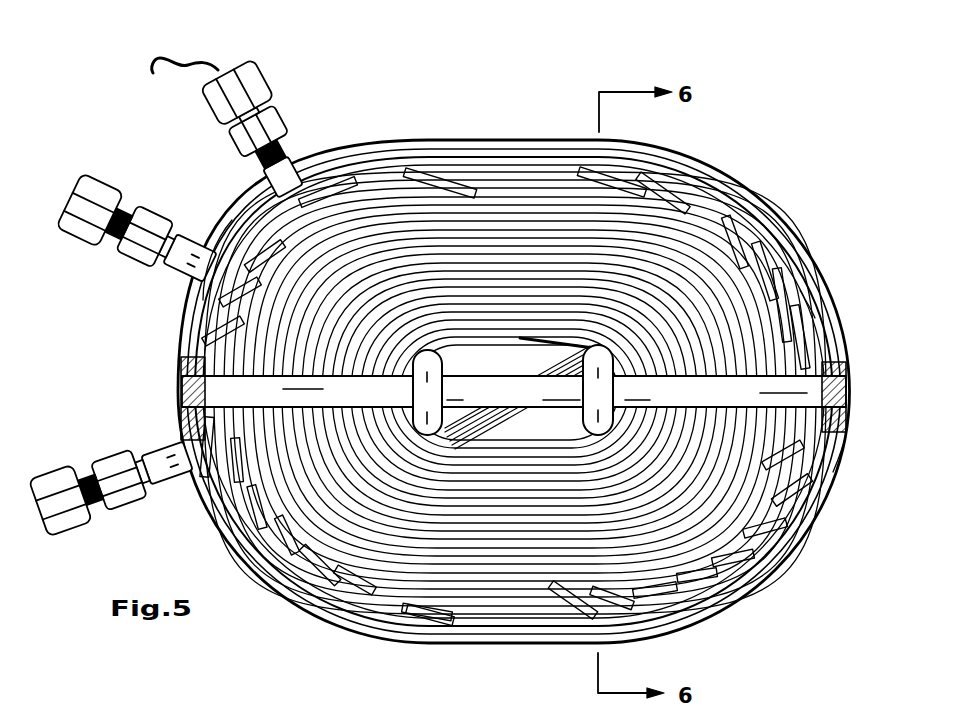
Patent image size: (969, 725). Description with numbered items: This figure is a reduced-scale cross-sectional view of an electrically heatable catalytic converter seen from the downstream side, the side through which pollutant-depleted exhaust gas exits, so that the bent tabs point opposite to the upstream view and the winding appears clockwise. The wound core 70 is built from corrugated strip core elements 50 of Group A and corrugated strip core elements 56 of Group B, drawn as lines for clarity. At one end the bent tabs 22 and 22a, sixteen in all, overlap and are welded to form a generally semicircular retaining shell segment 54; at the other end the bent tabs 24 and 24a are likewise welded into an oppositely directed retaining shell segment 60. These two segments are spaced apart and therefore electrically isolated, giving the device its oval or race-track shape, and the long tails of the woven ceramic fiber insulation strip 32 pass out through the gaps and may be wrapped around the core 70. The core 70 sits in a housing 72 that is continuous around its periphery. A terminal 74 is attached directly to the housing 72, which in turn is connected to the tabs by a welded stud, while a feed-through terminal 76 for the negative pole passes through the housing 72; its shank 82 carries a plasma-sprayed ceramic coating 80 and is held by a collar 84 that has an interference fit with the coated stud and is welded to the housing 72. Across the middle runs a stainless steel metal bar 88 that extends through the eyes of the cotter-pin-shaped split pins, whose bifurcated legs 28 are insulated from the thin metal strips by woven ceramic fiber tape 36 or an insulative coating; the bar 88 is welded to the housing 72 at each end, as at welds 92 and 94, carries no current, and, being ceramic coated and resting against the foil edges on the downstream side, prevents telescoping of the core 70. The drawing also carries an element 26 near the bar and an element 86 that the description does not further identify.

The bent tabs 22 is at (365, 178).
The bent tabs 22a is at (722, 575).
The bent tabs 24 is at (768, 253).
The bent tabs 24a is at (262, 546).
The mandrel 26 is at (479, 392).
The bifurcated leg 28 is at (657, 390).
The insulation strip 32 is at (373, 562).
The woven ceramic fiber tape 36 is at (545, 345).
The corrugated strip core elements 50 is at (558, 214).
The retaining shell segment 54 is at (212, 330).
The corrugated strip core elements 56 is at (470, 578).
The retaining shell segment 60 is at (800, 295).
The core 70 is at (730, 546).
The housing 72 is at (846, 444).
The terminal 74 is at (140, 206).
The feed-through terminal 76 is at (89, 464).
The ceramic coating 80 is at (160, 492).
The shank 82 is at (100, 507).
The collar 84 is at (180, 460).
The section plane 86 is at (357, 293).
The metal bar 88 is at (785, 390).
The weld 92 is at (848, 362).
The weld 94 is at (188, 362).